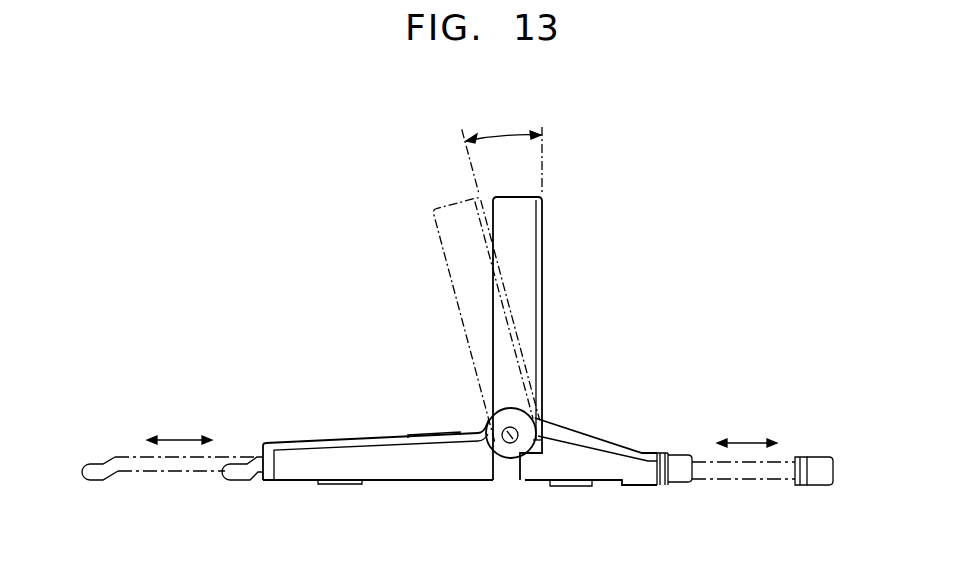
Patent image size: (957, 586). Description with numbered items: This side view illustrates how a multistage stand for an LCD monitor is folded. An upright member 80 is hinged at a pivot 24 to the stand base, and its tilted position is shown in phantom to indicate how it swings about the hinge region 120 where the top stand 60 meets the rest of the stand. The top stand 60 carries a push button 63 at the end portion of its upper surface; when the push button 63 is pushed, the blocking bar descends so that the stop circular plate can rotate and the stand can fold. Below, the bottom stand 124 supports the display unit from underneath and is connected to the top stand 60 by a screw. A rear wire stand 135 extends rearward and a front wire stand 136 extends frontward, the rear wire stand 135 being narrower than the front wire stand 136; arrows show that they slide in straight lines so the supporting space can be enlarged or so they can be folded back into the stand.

The display unit 80 is at (563, 242).
The hinge assembly 120 is at (365, 417).
The top stand 60 is at (297, 442).
The push button 63 is at (432, 434).
The bottom stand 124 is at (297, 470).
The bottom stand 24 is at (514, 442).
The rear wire stand 135 is at (176, 473).
The front wire stand 136 is at (823, 481).